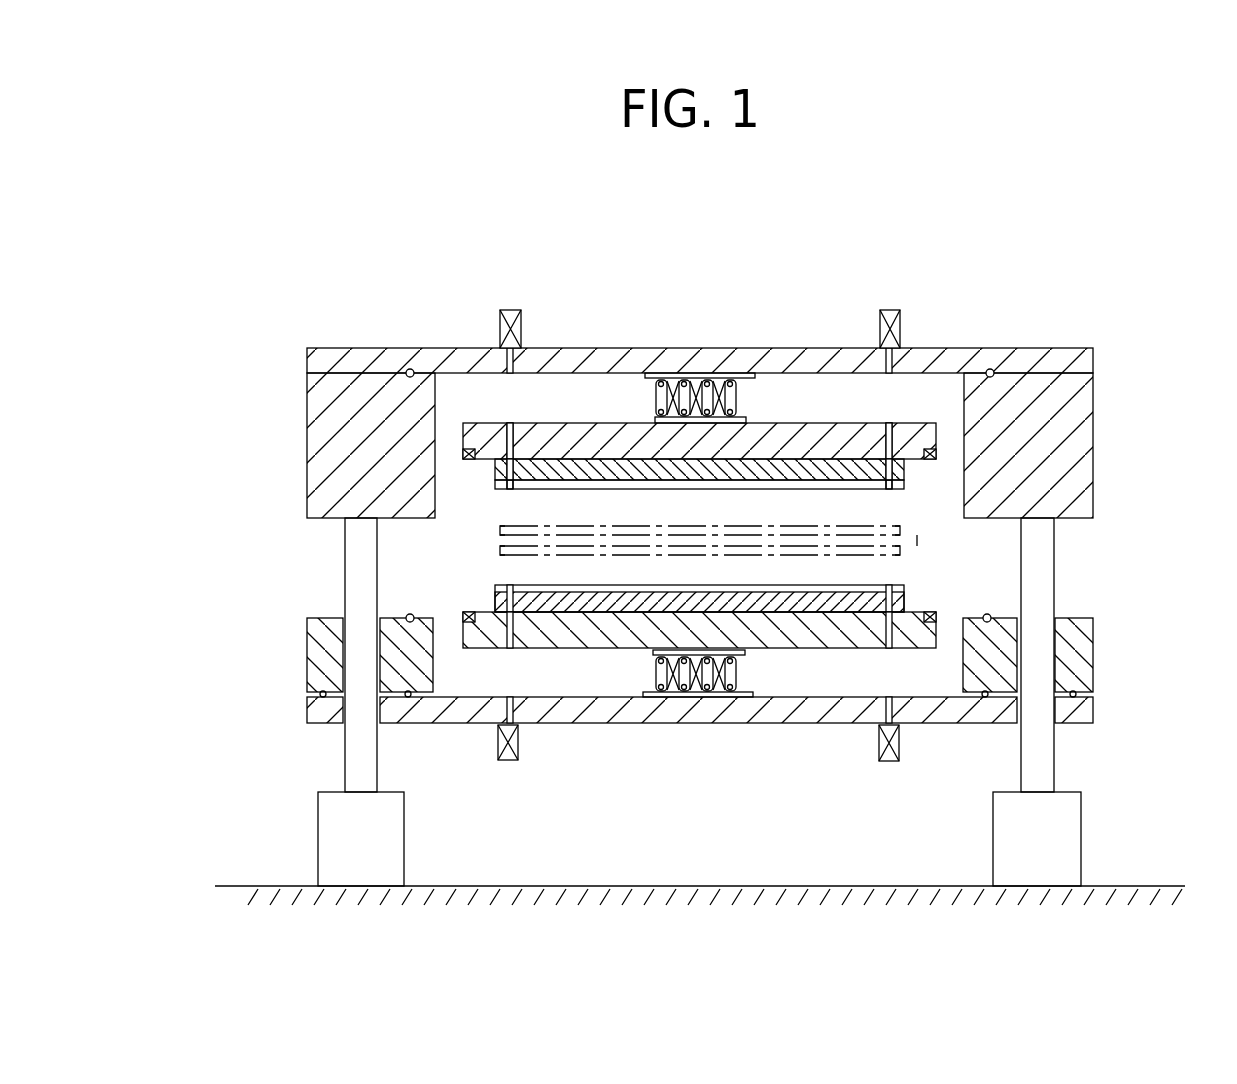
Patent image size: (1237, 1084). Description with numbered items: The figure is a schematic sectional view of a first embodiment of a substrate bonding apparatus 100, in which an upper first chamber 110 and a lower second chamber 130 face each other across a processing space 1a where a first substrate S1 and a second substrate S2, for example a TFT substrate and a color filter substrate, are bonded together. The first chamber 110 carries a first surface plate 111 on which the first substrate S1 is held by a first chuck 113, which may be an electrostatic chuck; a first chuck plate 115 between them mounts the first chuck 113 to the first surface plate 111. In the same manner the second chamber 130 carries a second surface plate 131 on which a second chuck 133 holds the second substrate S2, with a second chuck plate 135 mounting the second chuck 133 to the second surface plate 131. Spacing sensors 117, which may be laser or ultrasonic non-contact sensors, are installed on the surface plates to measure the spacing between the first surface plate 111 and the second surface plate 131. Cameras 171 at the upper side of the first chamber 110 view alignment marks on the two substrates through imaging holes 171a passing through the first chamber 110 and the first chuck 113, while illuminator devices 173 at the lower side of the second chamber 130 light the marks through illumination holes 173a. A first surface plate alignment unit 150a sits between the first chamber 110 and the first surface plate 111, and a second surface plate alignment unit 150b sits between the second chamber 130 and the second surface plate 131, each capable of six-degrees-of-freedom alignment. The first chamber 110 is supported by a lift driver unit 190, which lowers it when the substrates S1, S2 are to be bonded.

The substrate bonding apparatus 100 is at (727, 237).
The first chamber 110 is at (1095, 420).
The first surface plate 111 is at (463, 433).
The first chuck 113 is at (495, 486).
The first chuck plate 115 is at (495, 473).
The spacing sensor 117 is at (463, 455).
The second chamber 130 is at (1095, 661).
The second surface plate 131 is at (483, 638).
The second chuck 133 is at (495, 585).
The second chuck plate 135 is at (495, 600).
The first surface plate alignment unit 150a is at (758, 397).
The second surface plate alignment unit 150b is at (758, 672).
The camera 171 is at (515, 330).
The imaging hole 171a is at (513, 445).
The illuminator device 173 is at (515, 744).
The illumination hole 173a is at (513, 640).
The lift driver unit 190 is at (318, 824).
The first substrate S1 is at (882, 526).
The second substrate S2 is at (882, 556).
The processing space 1a is at (918, 540).